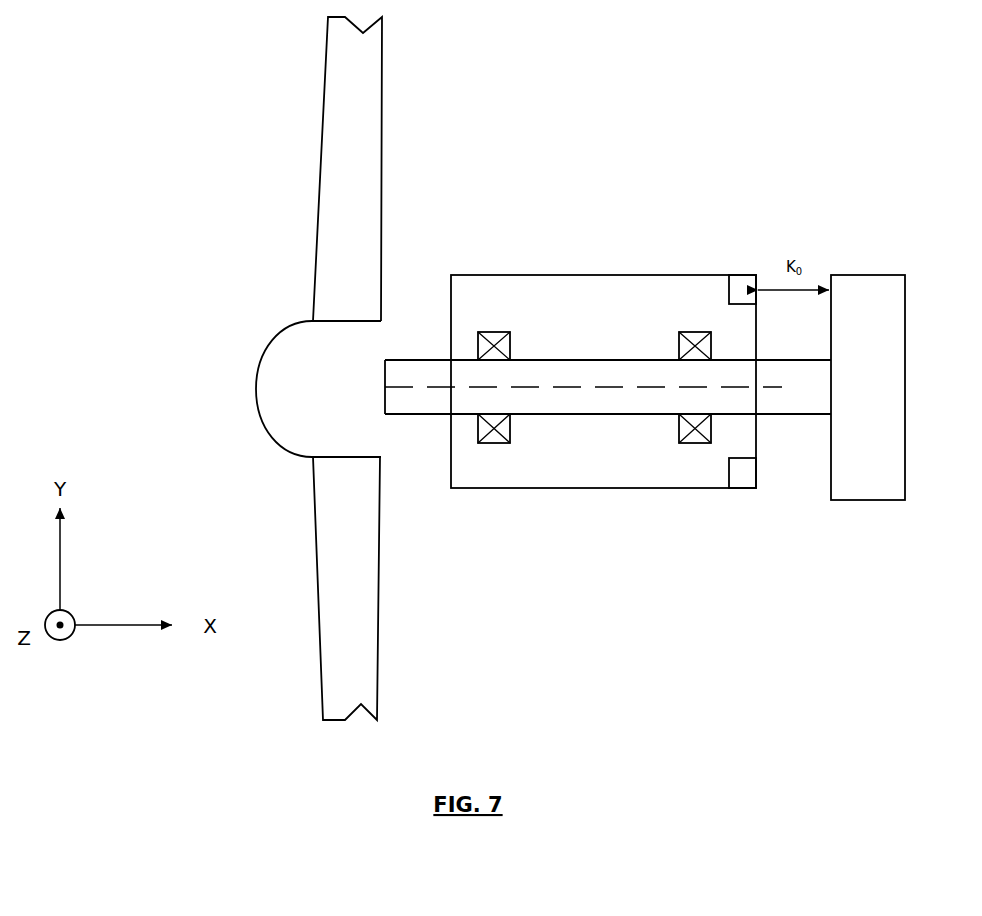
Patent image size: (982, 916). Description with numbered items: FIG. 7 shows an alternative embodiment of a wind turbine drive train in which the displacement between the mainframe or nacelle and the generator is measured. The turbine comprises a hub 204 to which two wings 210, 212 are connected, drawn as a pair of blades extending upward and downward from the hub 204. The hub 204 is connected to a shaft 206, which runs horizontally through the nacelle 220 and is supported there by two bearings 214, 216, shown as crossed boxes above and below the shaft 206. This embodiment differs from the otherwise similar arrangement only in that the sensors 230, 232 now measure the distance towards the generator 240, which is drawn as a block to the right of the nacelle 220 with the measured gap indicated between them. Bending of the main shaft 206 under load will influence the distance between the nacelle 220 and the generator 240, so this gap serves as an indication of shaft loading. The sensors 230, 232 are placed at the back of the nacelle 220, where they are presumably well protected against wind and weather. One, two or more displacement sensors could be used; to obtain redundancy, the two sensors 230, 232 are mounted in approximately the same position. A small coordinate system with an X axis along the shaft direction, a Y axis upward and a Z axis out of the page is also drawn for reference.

The hub 204 is at (250, 380).
The shaft 206 is at (412, 416).
The wing 210 is at (347, 169).
The wing 212 is at (346, 588).
The bearing 214 is at (490, 445).
The bearing 216 is at (686, 446).
The nacelle 220 is at (703, 492).
The displacement sensor 230 is at (727, 273).
The displacement sensor 232 is at (728, 456).
The generator 240 is at (865, 268).